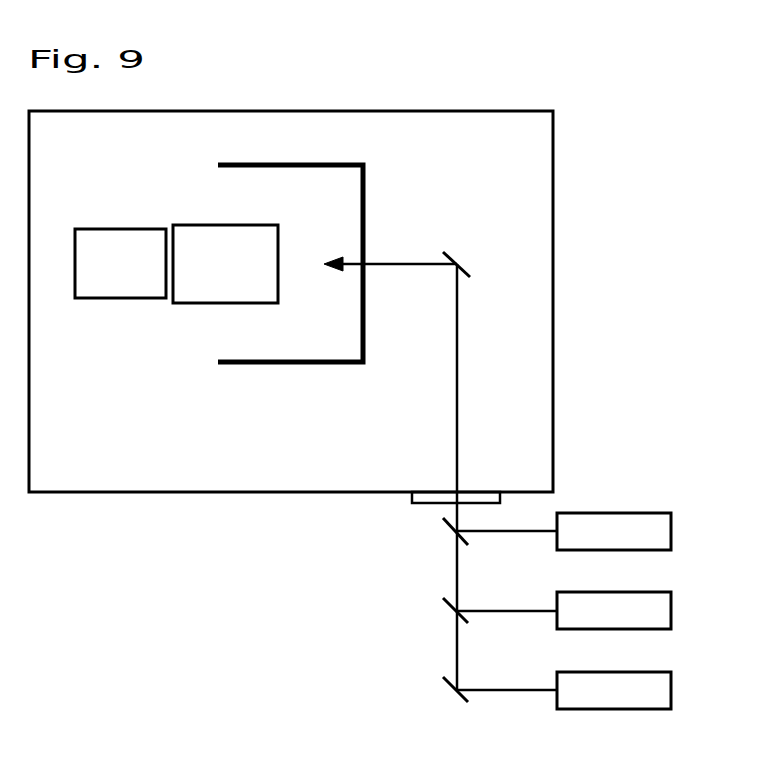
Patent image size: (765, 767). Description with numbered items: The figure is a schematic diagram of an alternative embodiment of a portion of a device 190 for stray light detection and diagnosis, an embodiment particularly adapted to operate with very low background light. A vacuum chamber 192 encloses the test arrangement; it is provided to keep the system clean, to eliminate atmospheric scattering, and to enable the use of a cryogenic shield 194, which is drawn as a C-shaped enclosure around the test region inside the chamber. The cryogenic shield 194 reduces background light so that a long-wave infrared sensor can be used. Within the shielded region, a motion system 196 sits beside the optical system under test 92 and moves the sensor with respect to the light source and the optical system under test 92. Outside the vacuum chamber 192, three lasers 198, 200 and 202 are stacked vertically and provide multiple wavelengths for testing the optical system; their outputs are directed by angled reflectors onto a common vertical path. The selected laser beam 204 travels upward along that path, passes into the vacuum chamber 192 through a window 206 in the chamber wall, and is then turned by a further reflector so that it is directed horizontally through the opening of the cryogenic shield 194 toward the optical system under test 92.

The device for stray light detection and diagnosis 190 is at (430, 66).
The vacuum chamber 192 is at (493, 111).
The cryogenic shield 194 is at (304, 165).
The motion system 196 is at (108, 229).
The optical system under test 92 is at (229, 225).
The laser 198 is at (612, 513).
The laser 200 is at (612, 592).
The laser 202 is at (612, 672).
The selected laser beam 204 is at (458, 382).
The window 206 is at (424, 503).